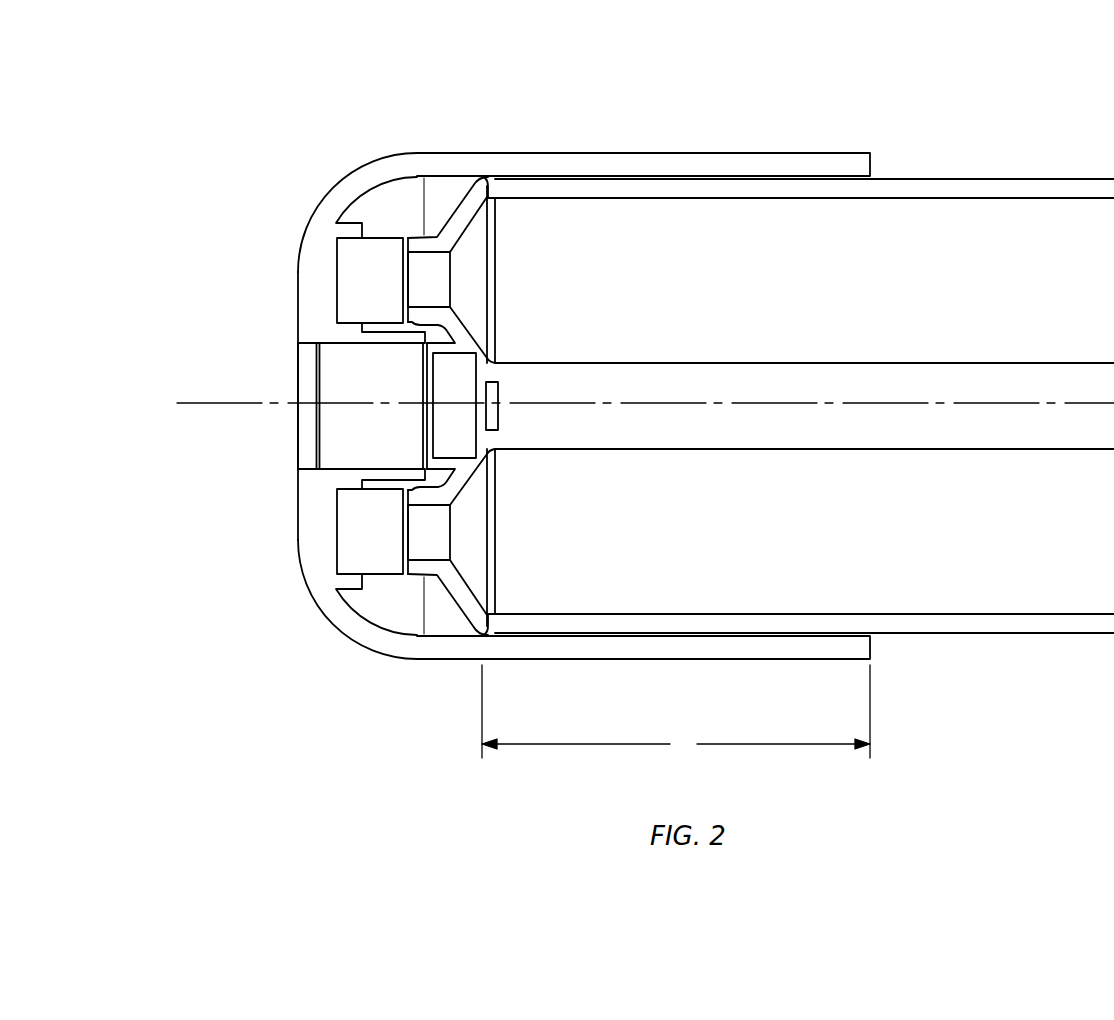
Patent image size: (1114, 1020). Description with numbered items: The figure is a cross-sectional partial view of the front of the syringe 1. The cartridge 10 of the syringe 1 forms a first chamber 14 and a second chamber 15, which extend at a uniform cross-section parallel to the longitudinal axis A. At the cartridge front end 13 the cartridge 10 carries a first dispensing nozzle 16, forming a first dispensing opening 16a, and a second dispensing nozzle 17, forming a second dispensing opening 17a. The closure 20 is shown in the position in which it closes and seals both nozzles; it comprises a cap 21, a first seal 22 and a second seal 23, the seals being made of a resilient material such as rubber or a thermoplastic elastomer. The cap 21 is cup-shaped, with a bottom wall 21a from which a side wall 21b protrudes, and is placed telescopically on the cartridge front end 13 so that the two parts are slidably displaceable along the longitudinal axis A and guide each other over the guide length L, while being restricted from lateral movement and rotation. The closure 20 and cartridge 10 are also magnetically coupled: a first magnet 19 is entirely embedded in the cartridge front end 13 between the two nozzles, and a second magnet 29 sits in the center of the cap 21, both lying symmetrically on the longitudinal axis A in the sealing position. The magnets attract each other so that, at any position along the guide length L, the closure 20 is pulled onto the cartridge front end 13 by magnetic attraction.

The syringe 1 is at (758, 88).
The cartridge 10 is at (1022, 638).
The cartridge front end 13 is at (818, 192).
The first chamber 14 is at (572, 590).
The second chamber 15 is at (660, 247).
The first dispensing nozzle 16 is at (428, 565).
The first dispensing opening 16a is at (405, 567).
The second dispensing nozzle 17 is at (431, 247).
The second dispensing opening 17a is at (407, 243).
The first magnet 19 is at (458, 375).
The closure 20 is at (790, 662).
The cap 21 is at (338, 628).
The bottom wall 21a is at (298, 492).
The side wall 21b is at (655, 648).
The first seal 22 is at (353, 537).
The second seal 23 is at (357, 277).
The second magnet 29 is at (335, 365).
The longitudinal axis A is at (203, 403).
The guide length L is at (676, 713).